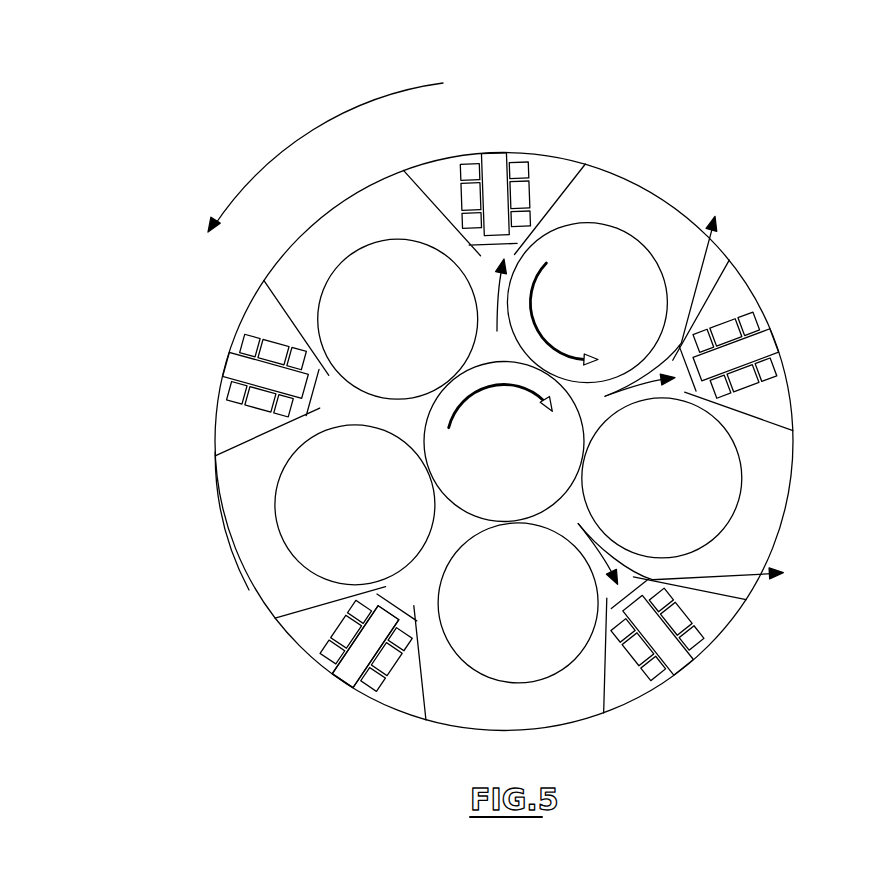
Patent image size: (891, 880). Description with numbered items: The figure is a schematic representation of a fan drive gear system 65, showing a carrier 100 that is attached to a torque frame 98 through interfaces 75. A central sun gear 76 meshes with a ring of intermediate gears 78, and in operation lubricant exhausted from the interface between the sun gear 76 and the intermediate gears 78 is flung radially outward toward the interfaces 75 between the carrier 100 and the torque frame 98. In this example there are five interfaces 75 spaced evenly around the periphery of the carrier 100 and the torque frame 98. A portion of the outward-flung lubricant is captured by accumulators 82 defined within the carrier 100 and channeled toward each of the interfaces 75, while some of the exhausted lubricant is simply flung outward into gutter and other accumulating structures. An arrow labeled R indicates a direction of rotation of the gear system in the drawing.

The fan drive gear system 65 is at (504, 412).
The interfaces 75 is at (491, 408).
The sun gear 76 is at (491, 455).
The intermediate gears 78 is at (385, 333).
The accumulators 82 is at (421, 188).
The torque frame 98 is at (377, 688).
The carrier 100 is at (280, 600).
The direction of rotation R is at (335, 152).